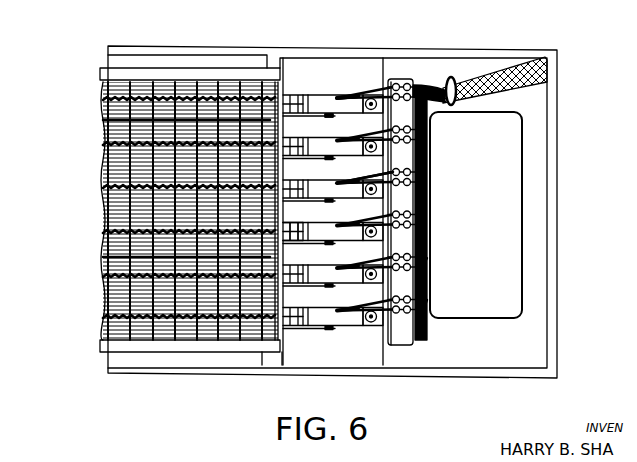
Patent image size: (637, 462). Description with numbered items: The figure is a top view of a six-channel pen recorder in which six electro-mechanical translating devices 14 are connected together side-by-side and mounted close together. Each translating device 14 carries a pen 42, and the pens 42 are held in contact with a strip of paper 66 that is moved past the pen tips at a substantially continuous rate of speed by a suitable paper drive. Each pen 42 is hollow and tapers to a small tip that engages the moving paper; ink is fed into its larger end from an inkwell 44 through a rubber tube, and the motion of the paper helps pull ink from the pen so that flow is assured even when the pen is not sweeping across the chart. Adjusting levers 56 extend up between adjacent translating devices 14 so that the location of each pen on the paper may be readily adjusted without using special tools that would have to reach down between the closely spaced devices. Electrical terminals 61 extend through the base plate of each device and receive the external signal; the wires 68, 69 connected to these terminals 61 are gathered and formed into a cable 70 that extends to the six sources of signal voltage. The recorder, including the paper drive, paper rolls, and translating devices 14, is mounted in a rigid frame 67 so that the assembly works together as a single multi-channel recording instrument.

The electro-mechanical translating device 14 is at (313, 100).
The pen 42 is at (282, 238).
The inkwell 44 is at (364, 158).
The adjusting lever 56 is at (329, 118).
The electrical terminal 61 is at (340, 92).
The strip of paper 66 is at (100, 307).
The housing casing 67 is at (366, 50).
The wire 68 is at (370, 88).
The wire 69 is at (389, 79).
The cable 70 is at (453, 78).